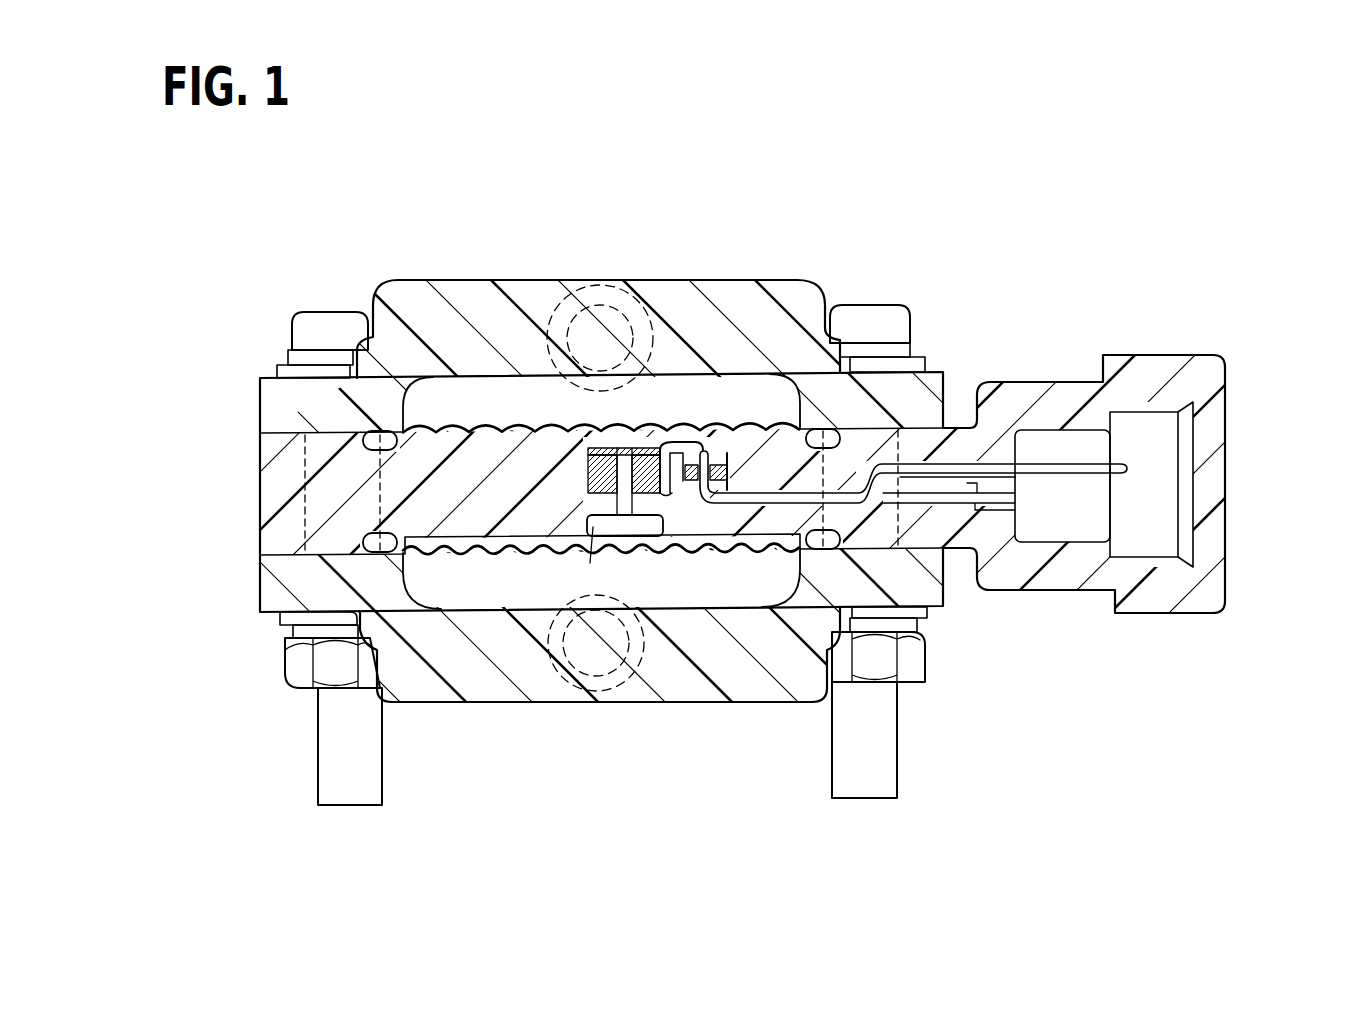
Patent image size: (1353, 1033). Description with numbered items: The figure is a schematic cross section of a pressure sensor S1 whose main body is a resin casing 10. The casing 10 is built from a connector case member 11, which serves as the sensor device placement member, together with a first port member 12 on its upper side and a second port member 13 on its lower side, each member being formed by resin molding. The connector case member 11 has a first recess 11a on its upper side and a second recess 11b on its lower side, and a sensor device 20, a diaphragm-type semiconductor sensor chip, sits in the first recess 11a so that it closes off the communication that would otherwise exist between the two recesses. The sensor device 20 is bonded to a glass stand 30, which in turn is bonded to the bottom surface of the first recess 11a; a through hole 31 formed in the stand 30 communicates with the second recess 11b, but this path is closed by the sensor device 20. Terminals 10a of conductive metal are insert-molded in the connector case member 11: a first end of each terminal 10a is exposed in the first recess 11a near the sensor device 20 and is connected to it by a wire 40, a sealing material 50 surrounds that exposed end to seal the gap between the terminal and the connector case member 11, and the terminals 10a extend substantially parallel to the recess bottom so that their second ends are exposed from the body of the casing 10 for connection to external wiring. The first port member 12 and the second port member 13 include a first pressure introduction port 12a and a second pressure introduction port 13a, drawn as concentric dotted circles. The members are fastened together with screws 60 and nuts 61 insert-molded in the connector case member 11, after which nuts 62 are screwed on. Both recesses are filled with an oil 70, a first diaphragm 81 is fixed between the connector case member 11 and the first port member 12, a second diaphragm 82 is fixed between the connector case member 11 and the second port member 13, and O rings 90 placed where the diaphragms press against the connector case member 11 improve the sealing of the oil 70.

The casing 10 is at (1013, 399).
The terminals 10a is at (1128, 470).
The connector case member 11 is at (1053, 572).
The first recess 11a is at (557, 427).
The second recess 11b is at (527, 610).
The first port member 12 is at (544, 314).
The first pressure introduction port 12a is at (600, 300).
The second port member 13 is at (705, 687).
The second pressure introduction port 13a is at (645, 527).
The sensor device 20 is at (642, 448).
The stand 30 is at (714, 434).
The through hole 31 is at (708, 440).
The wire 40 is at (733, 433).
The sealing material 50 is at (763, 432).
The screws 60 is at (330, 330).
The nuts 61 is at (262, 508).
The nuts 62 is at (292, 665).
The oil 70 is at (503, 345).
The first diaphragm 81 is at (583, 431).
The second diaphragm 82 is at (500, 555).
The O rings 90 is at (365, 438).
The pressure sensor S1 is at (1143, 287).